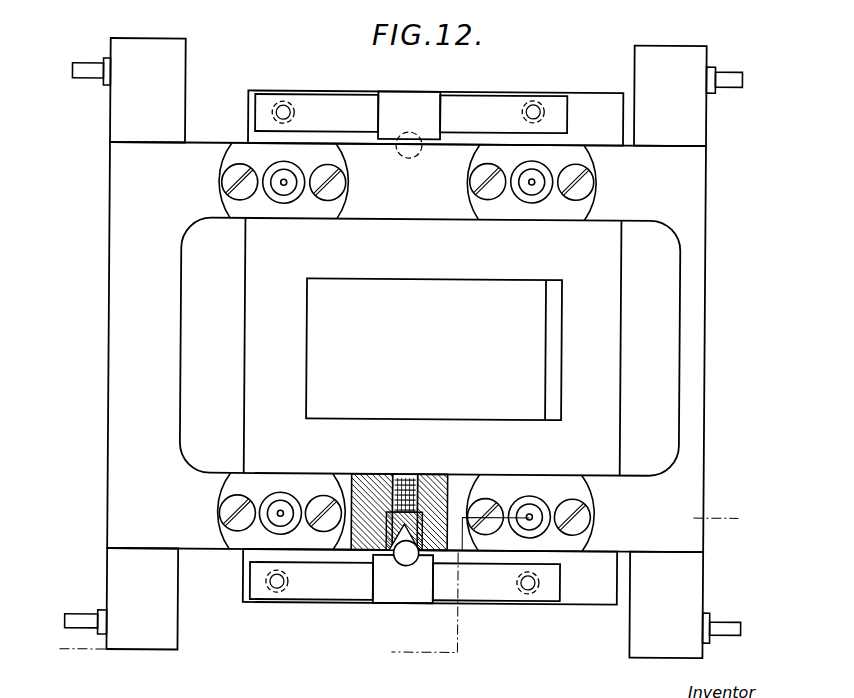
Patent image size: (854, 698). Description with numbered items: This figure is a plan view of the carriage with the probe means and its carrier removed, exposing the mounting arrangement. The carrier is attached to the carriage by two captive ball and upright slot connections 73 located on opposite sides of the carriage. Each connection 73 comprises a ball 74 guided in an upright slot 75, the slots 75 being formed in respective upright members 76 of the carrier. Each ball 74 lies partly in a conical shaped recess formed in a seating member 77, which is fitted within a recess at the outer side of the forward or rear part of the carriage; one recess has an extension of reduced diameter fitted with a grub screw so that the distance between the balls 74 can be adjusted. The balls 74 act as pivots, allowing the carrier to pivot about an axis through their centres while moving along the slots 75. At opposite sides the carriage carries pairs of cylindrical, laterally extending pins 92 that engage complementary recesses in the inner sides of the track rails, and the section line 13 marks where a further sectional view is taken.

The section line 13- 13 is at (72, 652).
The captive ball and upright slot connection 73 is at (408, 140).
The ball 74 is at (403, 153).
The upright slot 75 is at (413, 137).
The upright member 76 is at (390, 107).
The seating member 77 is at (420, 516).
The cylindrical laterally extending pin 92 is at (84, 70).